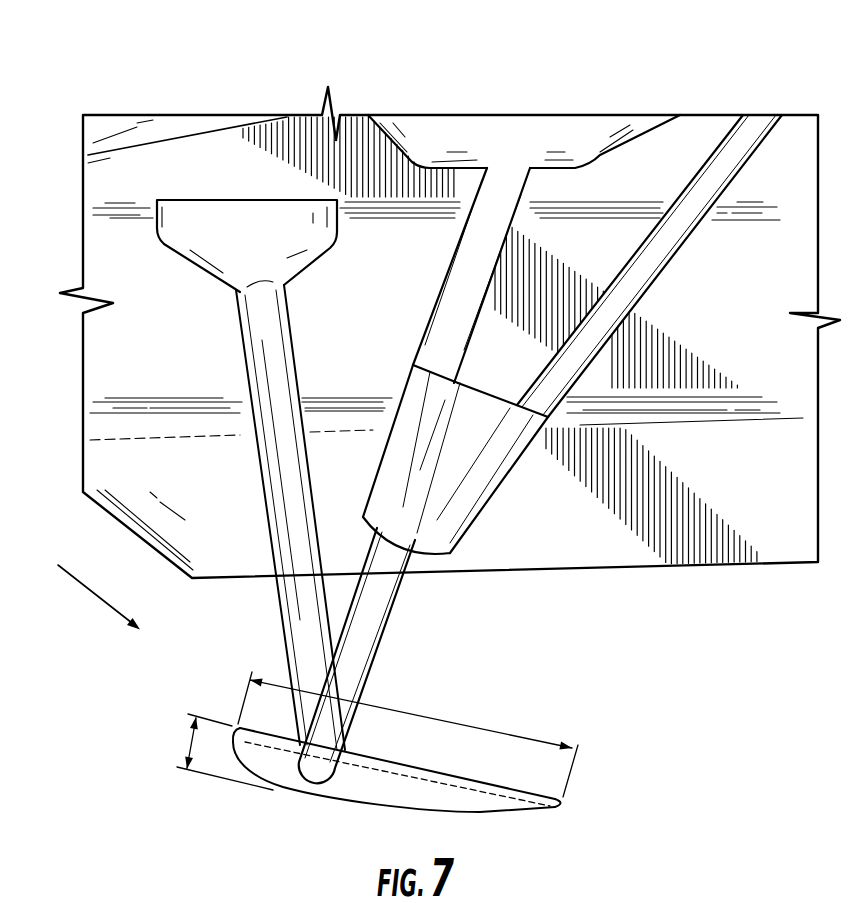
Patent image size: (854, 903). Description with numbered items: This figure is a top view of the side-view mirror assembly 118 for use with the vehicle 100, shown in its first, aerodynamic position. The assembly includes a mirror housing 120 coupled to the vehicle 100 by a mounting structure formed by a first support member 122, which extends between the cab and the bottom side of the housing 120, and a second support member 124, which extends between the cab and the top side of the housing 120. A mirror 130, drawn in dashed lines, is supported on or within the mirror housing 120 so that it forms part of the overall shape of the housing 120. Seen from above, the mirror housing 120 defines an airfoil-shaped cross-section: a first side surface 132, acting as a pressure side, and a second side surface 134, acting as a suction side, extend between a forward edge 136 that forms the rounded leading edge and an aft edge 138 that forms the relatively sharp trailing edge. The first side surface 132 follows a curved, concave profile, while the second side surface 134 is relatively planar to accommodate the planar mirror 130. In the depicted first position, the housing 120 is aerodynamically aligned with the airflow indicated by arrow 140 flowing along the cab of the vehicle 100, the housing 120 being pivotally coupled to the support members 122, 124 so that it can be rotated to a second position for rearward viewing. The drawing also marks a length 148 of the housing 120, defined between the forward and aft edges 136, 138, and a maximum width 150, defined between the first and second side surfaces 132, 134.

The vehicle 100 is at (116, 72).
The side-view mirror assembly 118 is at (401, 775).
The mirror housing 120 is at (394, 796).
The first support member 122 is at (267, 358).
The second support member 124 is at (380, 585).
The mirror 130 is at (413, 777).
The first side surface 132 is at (302, 793).
The second side surface 134 is at (352, 743).
The forward edge 136 is at (230, 734).
The aft edge 138 is at (567, 805).
The airflow arrow 140 is at (98, 600).
The length of the mirror housing 148 is at (395, 707).
The maximum width of the housing 150 is at (188, 735).